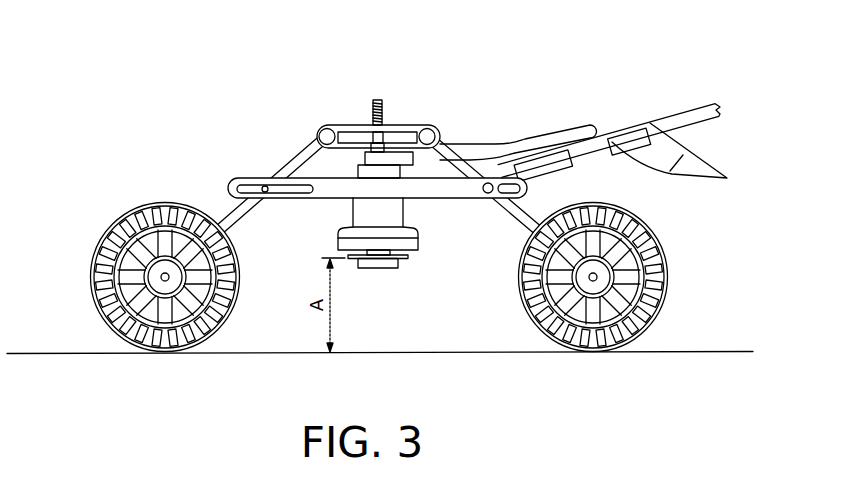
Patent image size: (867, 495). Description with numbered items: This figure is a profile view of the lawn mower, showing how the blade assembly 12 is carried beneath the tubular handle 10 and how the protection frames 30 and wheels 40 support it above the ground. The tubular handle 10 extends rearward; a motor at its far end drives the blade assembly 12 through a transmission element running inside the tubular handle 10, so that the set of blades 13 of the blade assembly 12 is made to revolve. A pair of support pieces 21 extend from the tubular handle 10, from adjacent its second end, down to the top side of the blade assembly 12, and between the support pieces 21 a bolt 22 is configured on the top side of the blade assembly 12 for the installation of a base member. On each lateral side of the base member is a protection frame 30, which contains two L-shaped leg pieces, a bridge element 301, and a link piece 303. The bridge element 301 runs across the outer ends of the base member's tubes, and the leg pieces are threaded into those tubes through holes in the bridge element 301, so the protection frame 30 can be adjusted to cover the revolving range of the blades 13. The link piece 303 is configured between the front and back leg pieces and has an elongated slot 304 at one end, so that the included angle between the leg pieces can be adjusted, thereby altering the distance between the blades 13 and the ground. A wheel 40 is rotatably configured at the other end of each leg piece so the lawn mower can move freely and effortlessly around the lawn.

The tubular handle 10 is at (670, 118).
The blade assembly 12 is at (365, 218).
The blades 13 is at (405, 258).
The support pieces 21 is at (487, 145).
The bolt 22 is at (373, 120).
The protection frame 30 is at (453, 132).
The bridge element 301 is at (395, 130).
The link piece 303 is at (452, 198).
The elongated slot 304 is at (283, 190).
The wheel 40 is at (97, 237).